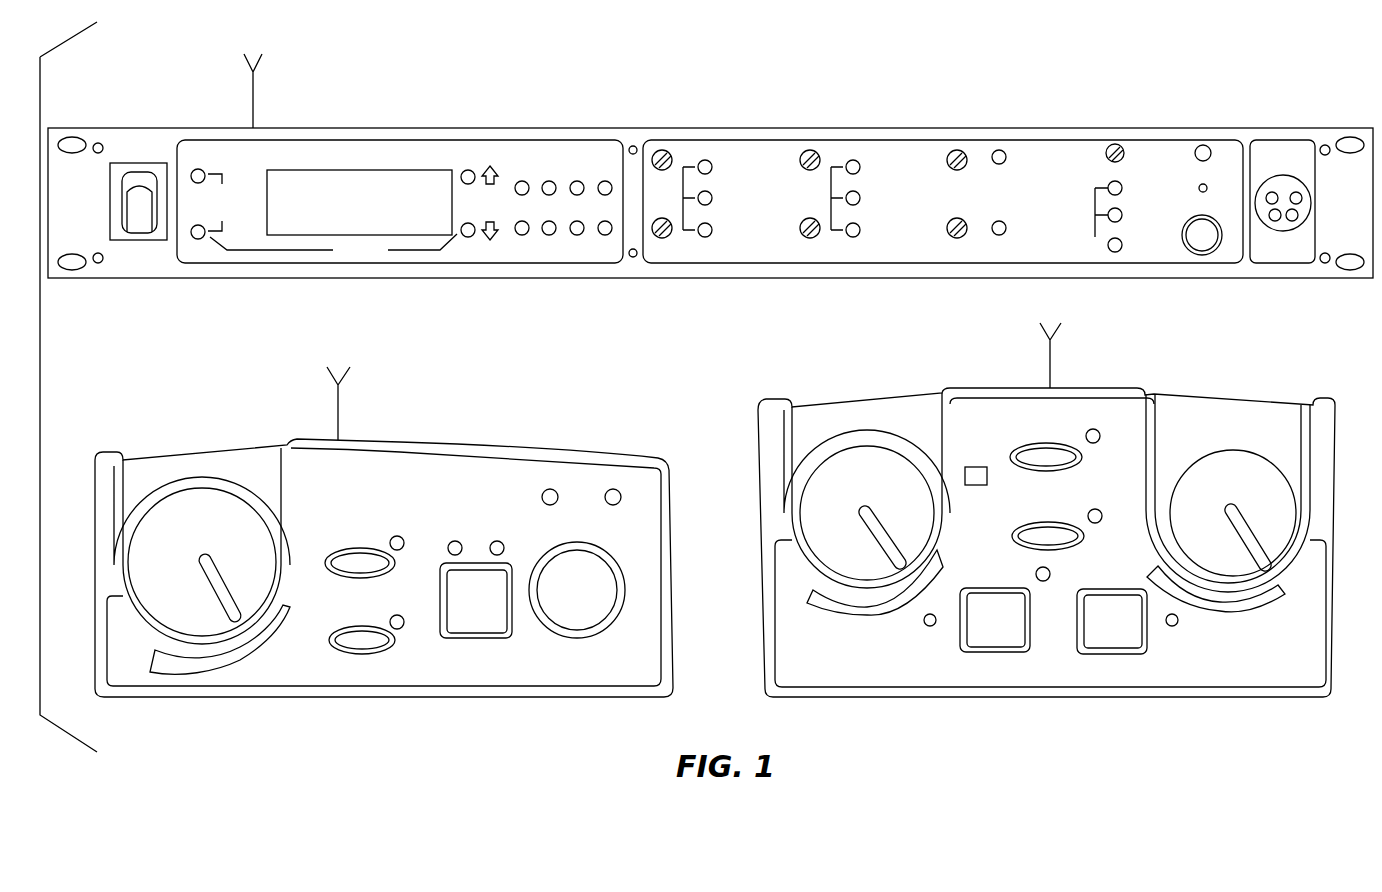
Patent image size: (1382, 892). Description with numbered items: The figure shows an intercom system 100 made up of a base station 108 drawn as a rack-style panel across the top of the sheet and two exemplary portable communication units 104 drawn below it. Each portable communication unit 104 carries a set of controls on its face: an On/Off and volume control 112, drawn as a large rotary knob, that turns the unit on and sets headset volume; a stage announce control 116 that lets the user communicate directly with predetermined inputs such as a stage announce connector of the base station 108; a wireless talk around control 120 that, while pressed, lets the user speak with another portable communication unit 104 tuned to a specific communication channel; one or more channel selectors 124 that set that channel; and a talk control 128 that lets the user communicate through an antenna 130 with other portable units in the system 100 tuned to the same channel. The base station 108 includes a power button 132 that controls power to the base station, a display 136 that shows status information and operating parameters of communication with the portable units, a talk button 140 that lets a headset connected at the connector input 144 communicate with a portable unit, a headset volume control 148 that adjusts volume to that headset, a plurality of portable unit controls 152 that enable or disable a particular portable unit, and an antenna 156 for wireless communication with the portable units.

The intercom system 100 is at (770, 63).
The portable communication unit 104 is at (500, 475).
The base station 108 is at (643, 127).
The On/Off and volume control 112 is at (188, 487).
The stage announce control 116 is at (355, 655).
The wireless talk around (WTA) control 120 is at (383, 537).
The channel selector 124 is at (443, 638).
The talk control 128 is at (622, 604).
The antenna 130 is at (330, 378).
The power button 132 is at (128, 164).
The display 136 is at (353, 170).
The talk button 140 is at (1203, 255).
The connector input 144 is at (1272, 150).
The headset volume control 148 is at (1113, 146).
The portable unit controls 152 is at (522, 181).
The antenna 156 is at (260, 72).